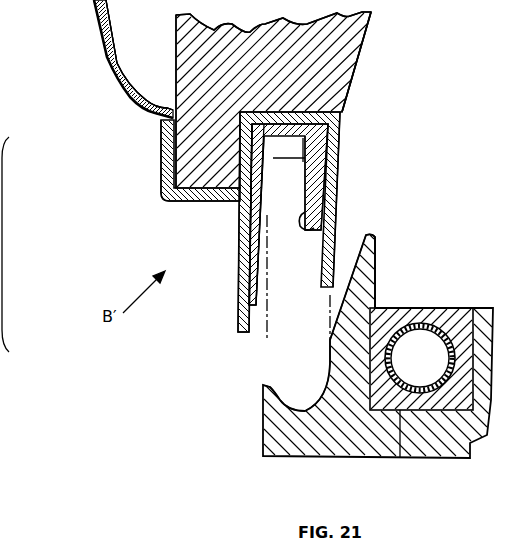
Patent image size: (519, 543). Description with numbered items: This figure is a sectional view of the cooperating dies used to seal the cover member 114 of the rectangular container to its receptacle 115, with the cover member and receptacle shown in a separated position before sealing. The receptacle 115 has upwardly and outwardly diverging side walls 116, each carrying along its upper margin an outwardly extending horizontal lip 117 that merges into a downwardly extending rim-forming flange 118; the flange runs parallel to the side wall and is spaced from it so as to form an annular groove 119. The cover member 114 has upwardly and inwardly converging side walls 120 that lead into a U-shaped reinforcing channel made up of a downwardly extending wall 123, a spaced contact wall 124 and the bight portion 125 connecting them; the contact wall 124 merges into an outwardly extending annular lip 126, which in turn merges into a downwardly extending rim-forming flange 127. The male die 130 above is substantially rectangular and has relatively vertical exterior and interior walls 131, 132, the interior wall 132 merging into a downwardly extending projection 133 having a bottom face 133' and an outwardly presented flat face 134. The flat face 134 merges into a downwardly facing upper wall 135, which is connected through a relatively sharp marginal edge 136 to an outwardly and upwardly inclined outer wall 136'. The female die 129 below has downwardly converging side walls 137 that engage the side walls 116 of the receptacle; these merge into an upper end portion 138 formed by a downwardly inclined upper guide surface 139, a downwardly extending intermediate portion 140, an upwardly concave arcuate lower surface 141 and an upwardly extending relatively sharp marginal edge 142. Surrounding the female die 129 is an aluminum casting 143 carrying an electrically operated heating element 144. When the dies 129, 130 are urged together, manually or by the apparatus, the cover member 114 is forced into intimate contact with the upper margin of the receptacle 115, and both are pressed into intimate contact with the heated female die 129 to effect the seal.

The cover member 114 is at (101, 47).
The receptacle 115 is at (242, 270).
The side walls 116 is at (238, 291).
The horizontal lips 117 is at (330, 145).
The rim-forming flanges 118 is at (330, 217).
The annular groove 119 is at (283, 175).
The side walls 120 is at (94, 12).
The downwardly extending wall 123 is at (162, 143).
The contact wall 124 is at (134, 105).
The bight portion 125 is at (203, 203).
The annular lip 126 is at (327, 95).
The rim-forming flange 127 is at (330, 190).
The female die 129 is at (375, 283).
The male die 130 is at (365, 41).
The exterior walls 131 is at (371, 11).
The interior walls 132 is at (176, 22).
The projection 133 is at (130, 156).
The bottom face 133' is at (136, 204).
The flat face 134 is at (322, 158).
The upper wall 135 is at (338, 111).
The marginal edge 136 is at (376, 199).
The outer wall 136' is at (390, 62).
The side walls 137 is at (262, 426).
The upper end portion 138 is at (373, 268).
The upper guide surface 139 is at (356, 252).
The intermediate portion 140 is at (330, 353).
The arcuate lower surface 141 is at (286, 404).
The marginal edge 142 is at (268, 390).
The aluminum casting 143 is at (445, 308).
The heating element 144 is at (403, 324).